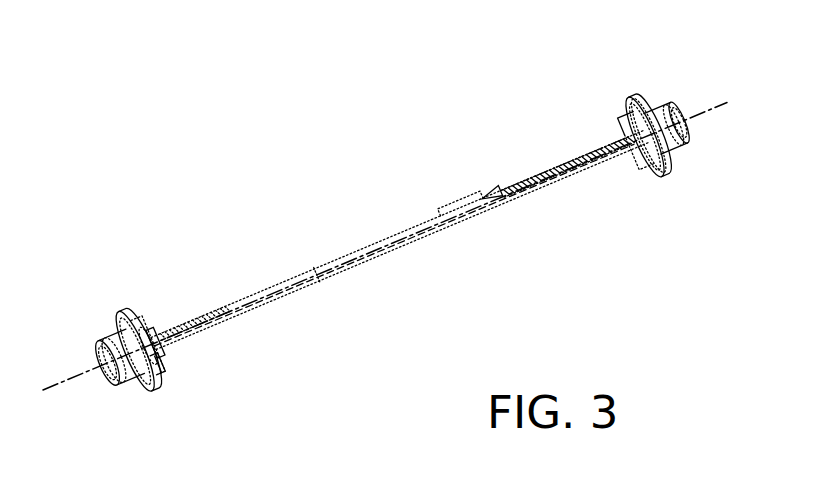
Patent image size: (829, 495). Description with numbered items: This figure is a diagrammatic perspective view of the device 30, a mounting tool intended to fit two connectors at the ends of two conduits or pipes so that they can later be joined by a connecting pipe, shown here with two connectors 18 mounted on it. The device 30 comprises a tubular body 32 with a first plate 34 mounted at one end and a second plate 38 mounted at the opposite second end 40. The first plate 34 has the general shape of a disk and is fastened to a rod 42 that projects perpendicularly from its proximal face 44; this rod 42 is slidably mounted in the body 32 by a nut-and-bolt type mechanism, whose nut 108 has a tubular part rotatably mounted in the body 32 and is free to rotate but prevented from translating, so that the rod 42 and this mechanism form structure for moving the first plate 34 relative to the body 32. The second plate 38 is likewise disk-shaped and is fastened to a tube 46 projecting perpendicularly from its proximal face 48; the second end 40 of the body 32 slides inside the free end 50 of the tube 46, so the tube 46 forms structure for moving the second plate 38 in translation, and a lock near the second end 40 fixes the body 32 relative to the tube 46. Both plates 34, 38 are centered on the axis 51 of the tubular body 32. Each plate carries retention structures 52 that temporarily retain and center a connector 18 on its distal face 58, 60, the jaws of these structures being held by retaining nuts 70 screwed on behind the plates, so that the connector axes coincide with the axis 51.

The device 30 is at (285, 172).
The connector 18 is at (392, 243).
The tubular body 32 is at (400, 239).
The first plate 34 is at (135, 351).
The second plate 38 is at (645, 136).
The second end 40 is at (536, 176).
The rod 42 is at (195, 323).
The proximal face 44 is at (144, 348).
The tube 46 is at (394, 245).
The proximal face 48 is at (649, 136).
The free end 50 is at (317, 275).
The axis 51 is at (385, 246).
The retention structures 52 is at (148, 345).
The distal face 58 is at (135, 351).
The distal face 60 is at (653, 133).
The retaining nut 70 is at (393, 243).
The nut 108 is at (155, 342).